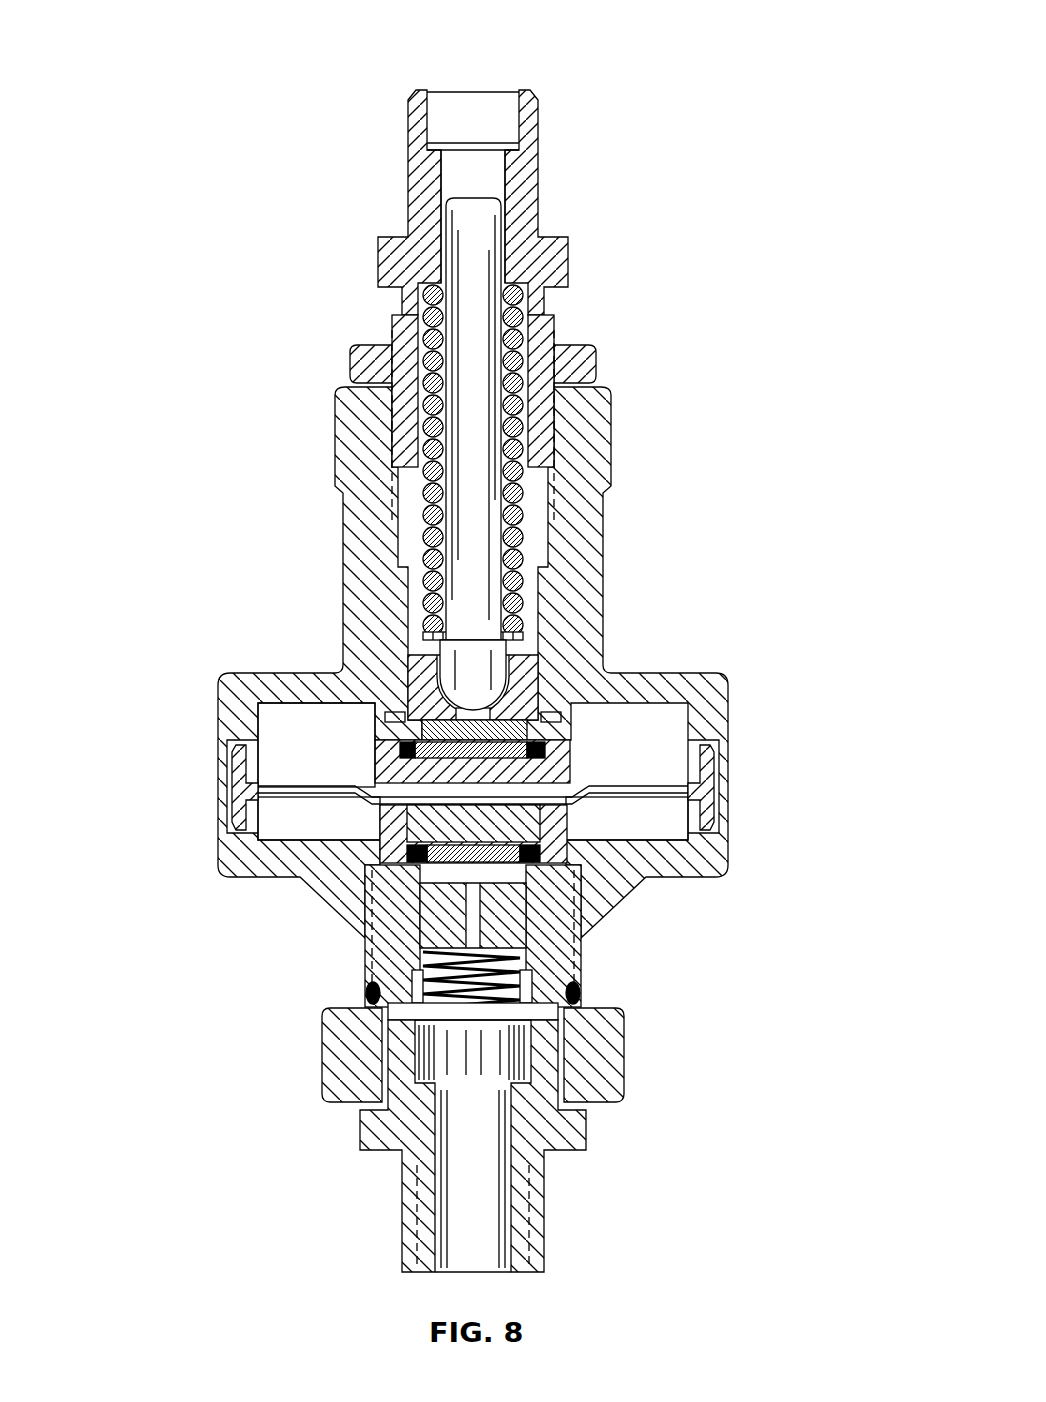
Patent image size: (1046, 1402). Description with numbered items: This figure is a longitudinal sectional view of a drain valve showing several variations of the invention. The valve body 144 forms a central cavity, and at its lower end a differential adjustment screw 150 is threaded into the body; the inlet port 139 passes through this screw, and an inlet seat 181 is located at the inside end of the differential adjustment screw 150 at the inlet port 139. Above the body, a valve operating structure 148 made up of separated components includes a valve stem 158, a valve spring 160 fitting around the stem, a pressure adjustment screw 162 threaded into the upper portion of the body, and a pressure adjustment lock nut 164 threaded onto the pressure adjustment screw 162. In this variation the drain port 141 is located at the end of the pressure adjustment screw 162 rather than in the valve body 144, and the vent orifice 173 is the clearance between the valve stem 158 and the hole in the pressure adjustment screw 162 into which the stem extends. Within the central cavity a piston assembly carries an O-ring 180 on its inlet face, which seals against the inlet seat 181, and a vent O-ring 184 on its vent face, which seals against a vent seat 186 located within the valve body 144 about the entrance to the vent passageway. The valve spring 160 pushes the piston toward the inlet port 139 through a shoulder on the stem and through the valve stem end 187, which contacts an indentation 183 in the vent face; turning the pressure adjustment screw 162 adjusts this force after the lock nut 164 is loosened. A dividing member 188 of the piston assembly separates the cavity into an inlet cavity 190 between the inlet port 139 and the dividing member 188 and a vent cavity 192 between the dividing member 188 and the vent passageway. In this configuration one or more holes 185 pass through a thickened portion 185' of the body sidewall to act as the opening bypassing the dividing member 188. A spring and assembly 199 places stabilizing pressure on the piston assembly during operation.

The drain port 141 is at (505, 88).
The pressure adjustment screw 162 is at (540, 170).
The vent orifice 173 is at (445, 222).
The valve stem 158 is at (473, 260).
The valve operating structure 148 is at (612, 283).
The pressure adjustment lock nut 164 is at (355, 347).
The valve spring 160 is at (525, 405).
The valve body 144 is at (337, 436).
The valve stem end 187 is at (470, 680).
The vent seat 186 is at (398, 712).
The indentation 183 is at (543, 740).
The vent cavity 192 is at (290, 737).
The vent O-ring 184 is at (547, 742).
The thickened portion of the sidewall 185' is at (488, 802).
The holes 185 is at (488, 781).
The inlet cavity 190 is at (285, 820).
The O-ring 180 is at (365, 935).
The dividing member 188 is at (628, 789).
The inlet seat 181 is at (525, 945).
The inlet port 139 is at (457, 875).
The differential adjustment screw 150 is at (590, 1073).
The spring and assembly 199 is at (423, 985).